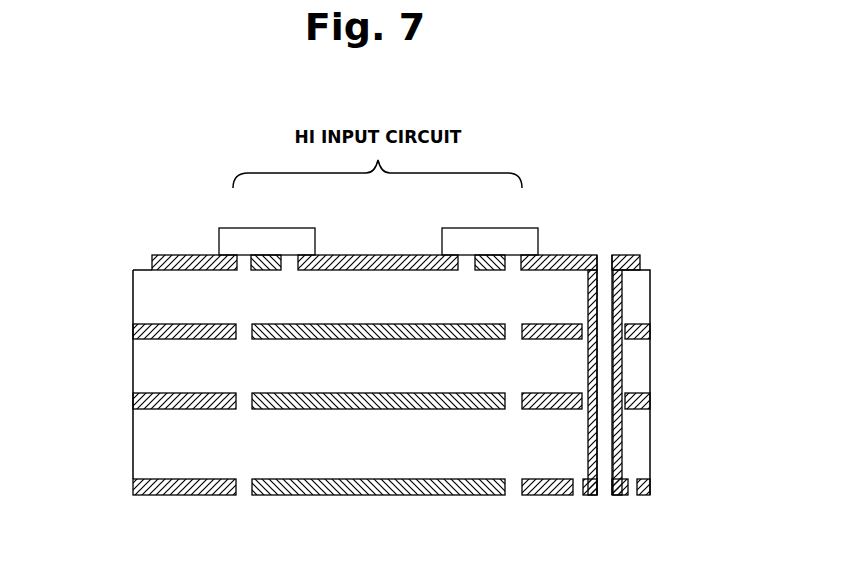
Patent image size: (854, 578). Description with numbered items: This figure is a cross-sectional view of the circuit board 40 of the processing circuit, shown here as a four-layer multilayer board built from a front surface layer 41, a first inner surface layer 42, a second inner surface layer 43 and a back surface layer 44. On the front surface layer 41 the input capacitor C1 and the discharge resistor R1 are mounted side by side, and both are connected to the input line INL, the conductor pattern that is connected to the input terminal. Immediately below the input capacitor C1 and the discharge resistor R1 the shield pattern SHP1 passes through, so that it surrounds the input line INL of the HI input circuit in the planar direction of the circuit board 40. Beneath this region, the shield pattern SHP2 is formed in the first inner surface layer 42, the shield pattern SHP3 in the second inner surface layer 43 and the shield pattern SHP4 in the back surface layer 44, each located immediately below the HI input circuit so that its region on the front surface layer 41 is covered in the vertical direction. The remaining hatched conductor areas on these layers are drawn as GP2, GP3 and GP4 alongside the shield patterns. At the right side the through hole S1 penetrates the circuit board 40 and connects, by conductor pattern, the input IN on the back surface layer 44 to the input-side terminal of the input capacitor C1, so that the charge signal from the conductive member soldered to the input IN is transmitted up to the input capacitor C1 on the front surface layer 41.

The circuit board 40 is at (625, 194).
The front surface layer 41 is at (152, 262).
The first inner surface layer 42 is at (133, 334).
The second inner surface layer 43 is at (133, 407).
The back surface layer 44 is at (133, 484).
The discharge resistor R1 is at (219, 226).
The input capacitor C1 is at (538, 235).
The through hole S1 is at (606, 255).
The input line INL is at (380, 255).
The shield pattern SHP1 is at (485, 270).
The shield pattern SHP2 is at (437, 339).
The shield pattern SHP3 is at (437, 409).
The shield pattern SHP4 is at (412, 495).
The ground pattern of second layer GP2 is at (155, 339).
The ground pattern of third layer GP3 is at (155, 409).
The ground pattern of fourth layer GP4 is at (212, 495).
The input IN is at (618, 495).